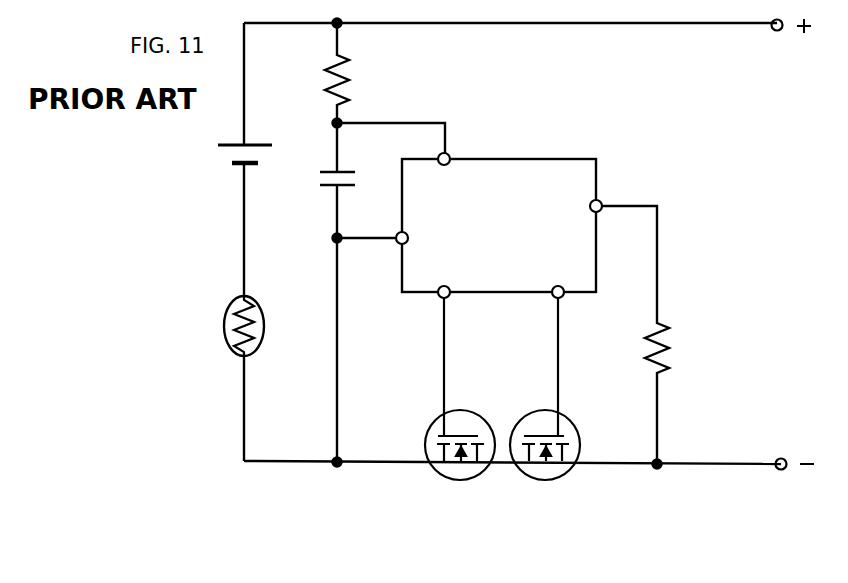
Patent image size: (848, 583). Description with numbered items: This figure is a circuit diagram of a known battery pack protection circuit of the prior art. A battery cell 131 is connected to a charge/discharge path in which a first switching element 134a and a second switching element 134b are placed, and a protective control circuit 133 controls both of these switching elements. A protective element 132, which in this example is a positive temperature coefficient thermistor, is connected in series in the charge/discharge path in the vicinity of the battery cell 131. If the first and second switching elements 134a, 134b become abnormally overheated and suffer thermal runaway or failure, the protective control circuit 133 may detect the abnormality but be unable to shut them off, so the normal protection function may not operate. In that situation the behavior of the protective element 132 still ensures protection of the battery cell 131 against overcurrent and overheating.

The battery cell 131 is at (215, 152).
The protective element 132 is at (223, 323).
The protective control circuit 133 is at (598, 158).
The first switching element 134a is at (461, 481).
The second switching element 134b is at (546, 481).